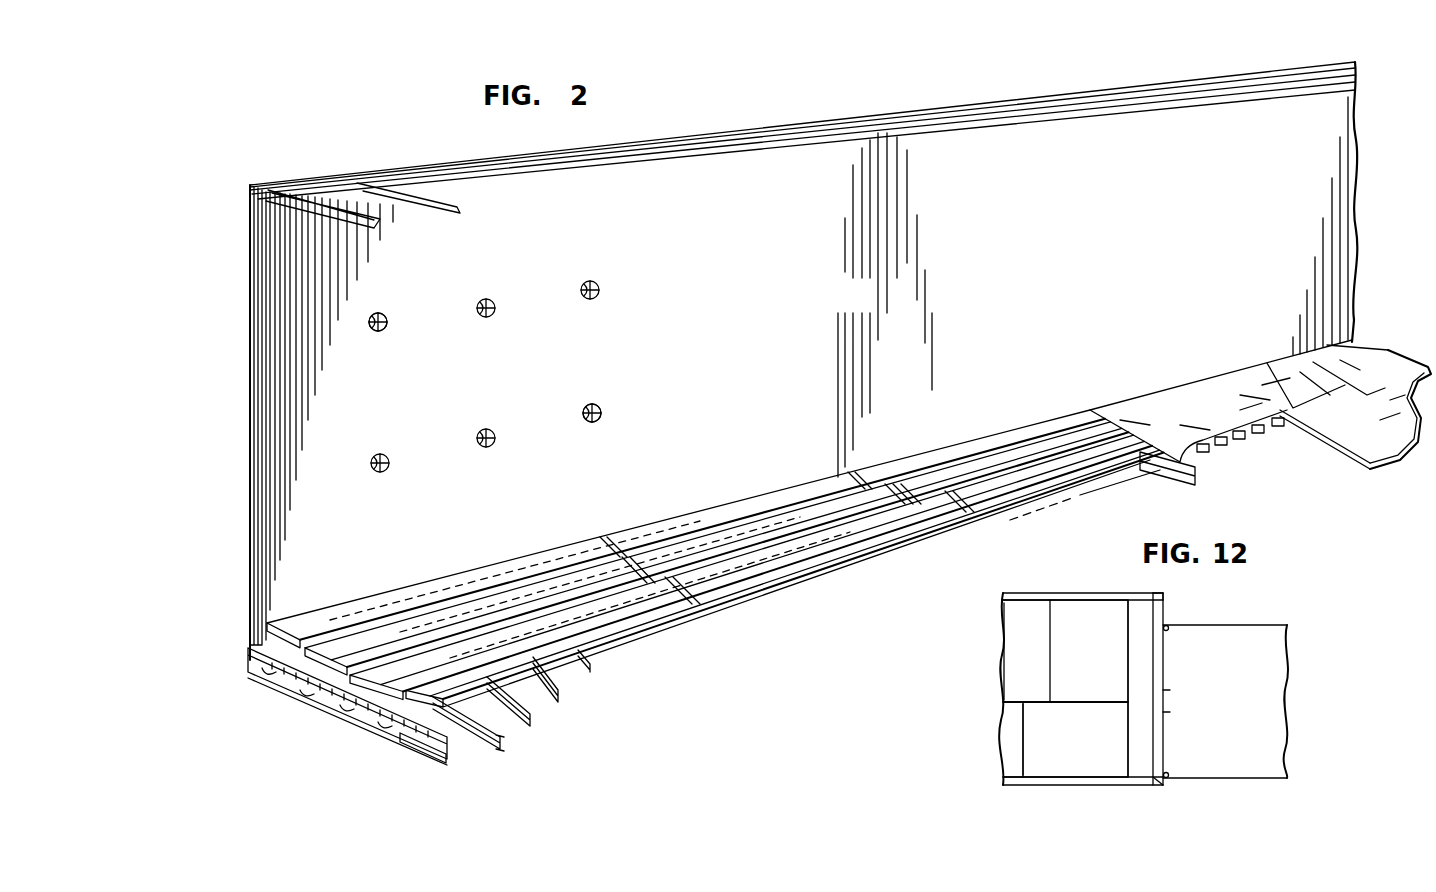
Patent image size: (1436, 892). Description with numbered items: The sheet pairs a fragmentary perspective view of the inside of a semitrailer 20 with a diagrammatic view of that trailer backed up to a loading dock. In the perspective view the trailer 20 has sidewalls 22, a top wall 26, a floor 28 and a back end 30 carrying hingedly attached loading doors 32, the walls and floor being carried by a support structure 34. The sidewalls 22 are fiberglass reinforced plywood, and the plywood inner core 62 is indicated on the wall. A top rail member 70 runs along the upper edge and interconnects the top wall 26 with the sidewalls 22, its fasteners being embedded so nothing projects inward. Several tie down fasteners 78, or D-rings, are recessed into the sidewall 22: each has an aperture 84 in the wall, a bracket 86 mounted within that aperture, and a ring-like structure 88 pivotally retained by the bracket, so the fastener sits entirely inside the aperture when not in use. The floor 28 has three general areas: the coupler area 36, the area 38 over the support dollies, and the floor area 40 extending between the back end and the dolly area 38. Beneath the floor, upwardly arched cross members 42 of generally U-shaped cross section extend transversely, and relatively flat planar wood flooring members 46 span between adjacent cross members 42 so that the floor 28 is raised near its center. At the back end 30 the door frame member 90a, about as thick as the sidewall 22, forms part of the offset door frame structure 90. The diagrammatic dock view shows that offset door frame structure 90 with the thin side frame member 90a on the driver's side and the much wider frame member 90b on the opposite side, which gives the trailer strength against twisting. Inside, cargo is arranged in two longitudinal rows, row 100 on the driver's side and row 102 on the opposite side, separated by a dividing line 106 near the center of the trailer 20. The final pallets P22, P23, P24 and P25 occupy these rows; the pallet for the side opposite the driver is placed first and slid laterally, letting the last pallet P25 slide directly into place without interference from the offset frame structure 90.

In FIG. 2, the semitrailer 20 is at (822, 429).
In FIG. 12, the semitrailer 20 is at (1100, 674).
In FIG. 2, the top rail member 70 is at (664, 152).
In FIG. 2, the sidewall 22 is at (1310, 212).
In FIG. 12, the sidewall 22 is at (1040, 592).
In FIG. 2, the back end 30 is at (247, 561).
In FIG. 12, the back end 30 is at (1168, 667).
In FIG. 2, the side frame member 90a is at (264, 502).
In FIG. 12, the side frame member 90a is at (1157, 787).
In FIG. 12, the frame member 90b is at (1167, 598).
In FIG. 12, the offset door frame structure 90 is at (1183, 696).
In FIG. 2, the top wall 26 is at (341, 217).
In FIG. 2, the plywood inner core 62 is at (869, 301).
In FIG. 2, the bracket 86 is at (384, 317).
In FIG. 2, the ring-like structure 88 is at (383, 331).
In FIG. 2, the tie down fastener 78 is at (493, 303).
In FIG. 2, the aperture 84 is at (600, 289).
In FIG. 2, the floor 28 is at (715, 558).
In FIG. 2, the floor area 40 is at (703, 543).
In FIG. 2, the flooring member 46 is at (662, 528).
In FIG. 2, the support structure 34 is at (324, 684).
In FIG. 2, the cross member 42 is at (588, 670).
In FIG. 2, the area over the support dollies 38 is at (1161, 412).
In FIG. 2, the coupler area 36 is at (1353, 367).
In FIG. 12, the row 102 is at (998, 619).
In FIG. 12, the row 100 is at (998, 724).
In FIG. 12, the dividing line 106 is at (1009, 697).
In FIG. 12, the pallet P22 is at (1020, 647).
In FIG. 12, the pallet P23 is at (1008, 748).
In FIG. 12, the pallet P24 is at (1089, 651).
In FIG. 12, the pallet P25 is at (1075, 739).
In FIG. 12, the loading door 32 is at (1164, 712).